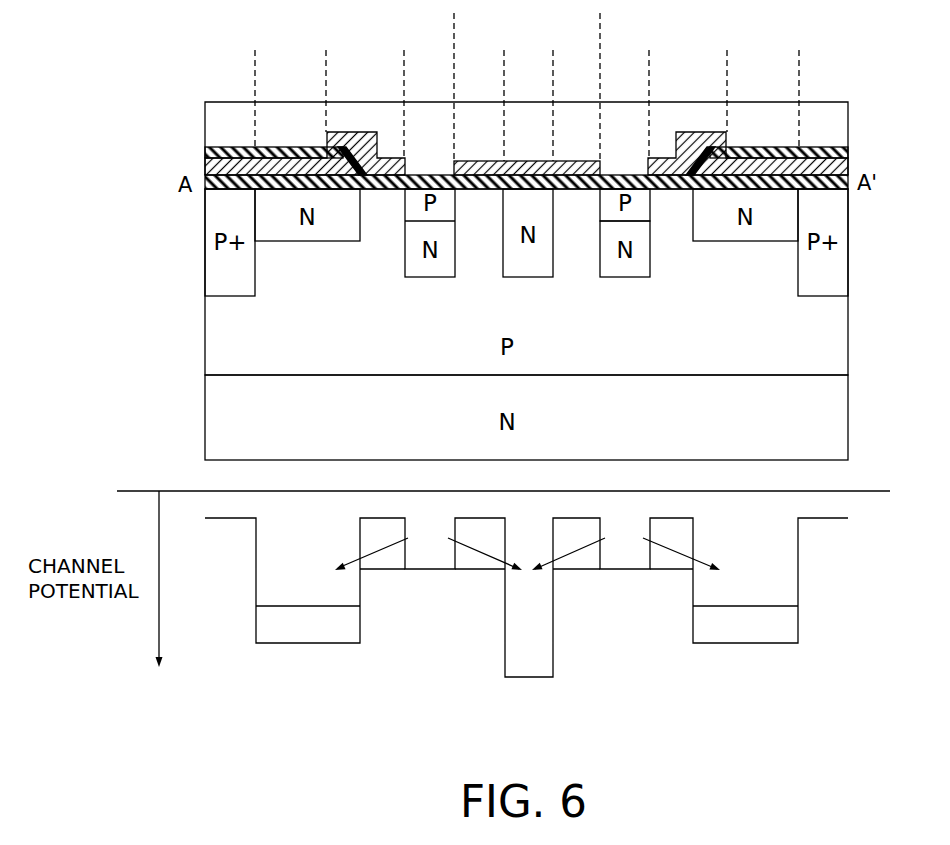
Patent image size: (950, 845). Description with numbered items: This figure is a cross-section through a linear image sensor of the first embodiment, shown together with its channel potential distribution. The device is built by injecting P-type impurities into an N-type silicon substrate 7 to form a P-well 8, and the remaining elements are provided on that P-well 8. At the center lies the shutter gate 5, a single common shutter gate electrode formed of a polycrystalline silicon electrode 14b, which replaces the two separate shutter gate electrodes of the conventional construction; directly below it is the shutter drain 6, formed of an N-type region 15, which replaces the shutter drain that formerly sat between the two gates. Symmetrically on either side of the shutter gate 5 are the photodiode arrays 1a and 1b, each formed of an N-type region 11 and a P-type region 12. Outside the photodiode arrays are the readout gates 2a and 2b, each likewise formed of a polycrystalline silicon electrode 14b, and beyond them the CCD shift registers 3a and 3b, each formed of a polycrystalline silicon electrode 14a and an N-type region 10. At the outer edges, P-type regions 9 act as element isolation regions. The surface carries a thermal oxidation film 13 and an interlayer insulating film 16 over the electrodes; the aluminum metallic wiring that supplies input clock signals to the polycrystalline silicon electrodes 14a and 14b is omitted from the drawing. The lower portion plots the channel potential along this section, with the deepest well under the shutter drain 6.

The photodiode array 1a is at (649, 73).
The photodiode array 1b is at (454, 73).
The readout gate 2a is at (727, 73).
The readout gate 2b is at (404, 73).
The CCD shift register 3a is at (799, 73).
The CCD shift register 3b is at (326, 73).
The shutter gate electrode 5 is at (600, 32).
The shutter drain 6 is at (553, 73).
The N-type silicon substrate 7 is at (220, 410).
The P-well 8 is at (220, 328).
The P-type region 9 is at (220, 279).
The N-type region 10 is at (312, 233).
The N-type region 11 is at (637, 266).
The P-type region 12 is at (643, 208).
The thermal oxidation film 13 is at (805, 147).
The polycrystalline silicon electrode 14a is at (215, 165).
The polycrystalline silicon electrode 14b is at (337, 142).
The N-type region 15 is at (537, 266).
The interlayer insulating film 16 is at (826, 112).